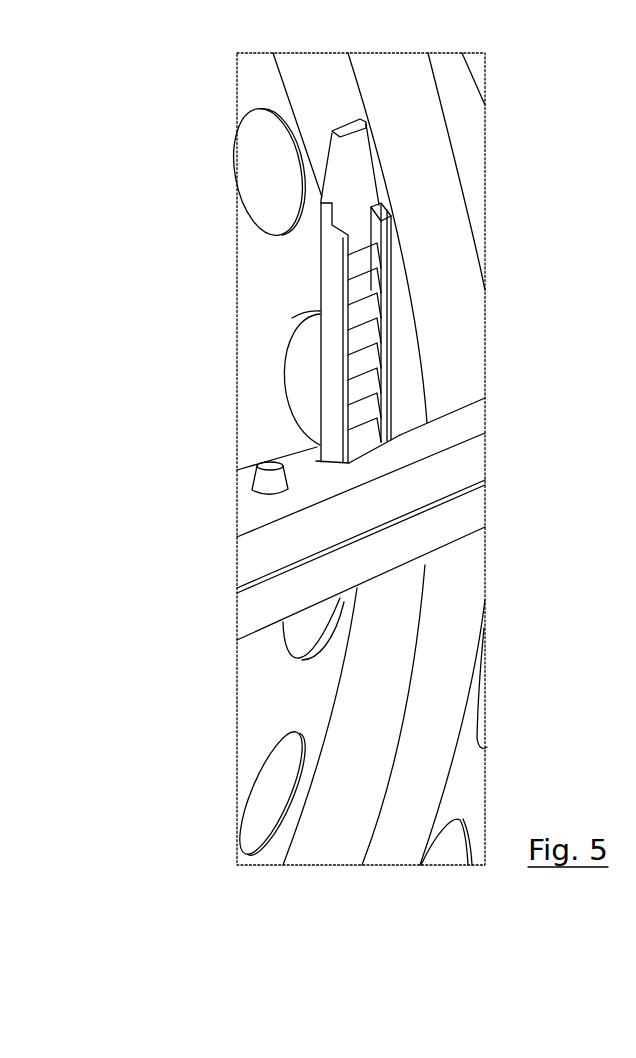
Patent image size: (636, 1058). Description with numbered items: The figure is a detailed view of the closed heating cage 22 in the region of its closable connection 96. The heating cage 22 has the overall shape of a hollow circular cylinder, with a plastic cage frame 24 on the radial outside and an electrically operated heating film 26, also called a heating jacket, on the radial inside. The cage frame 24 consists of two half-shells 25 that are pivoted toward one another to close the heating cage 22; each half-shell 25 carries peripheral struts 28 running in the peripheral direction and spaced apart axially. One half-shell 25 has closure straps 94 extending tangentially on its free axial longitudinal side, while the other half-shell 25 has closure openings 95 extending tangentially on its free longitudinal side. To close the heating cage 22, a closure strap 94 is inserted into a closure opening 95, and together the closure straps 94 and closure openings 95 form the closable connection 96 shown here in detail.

The heating cage 22 is at (228, 172).
The cage frame 24 is at (458, 255).
The half-shells 25 is at (434, 123).
The heating film 26 is at (257, 713).
The peripheral struts 28 is at (462, 315).
The closure straps 94 is at (335, 320).
The closure openings 95 is at (372, 452).
The closable connection 96 is at (403, 432).